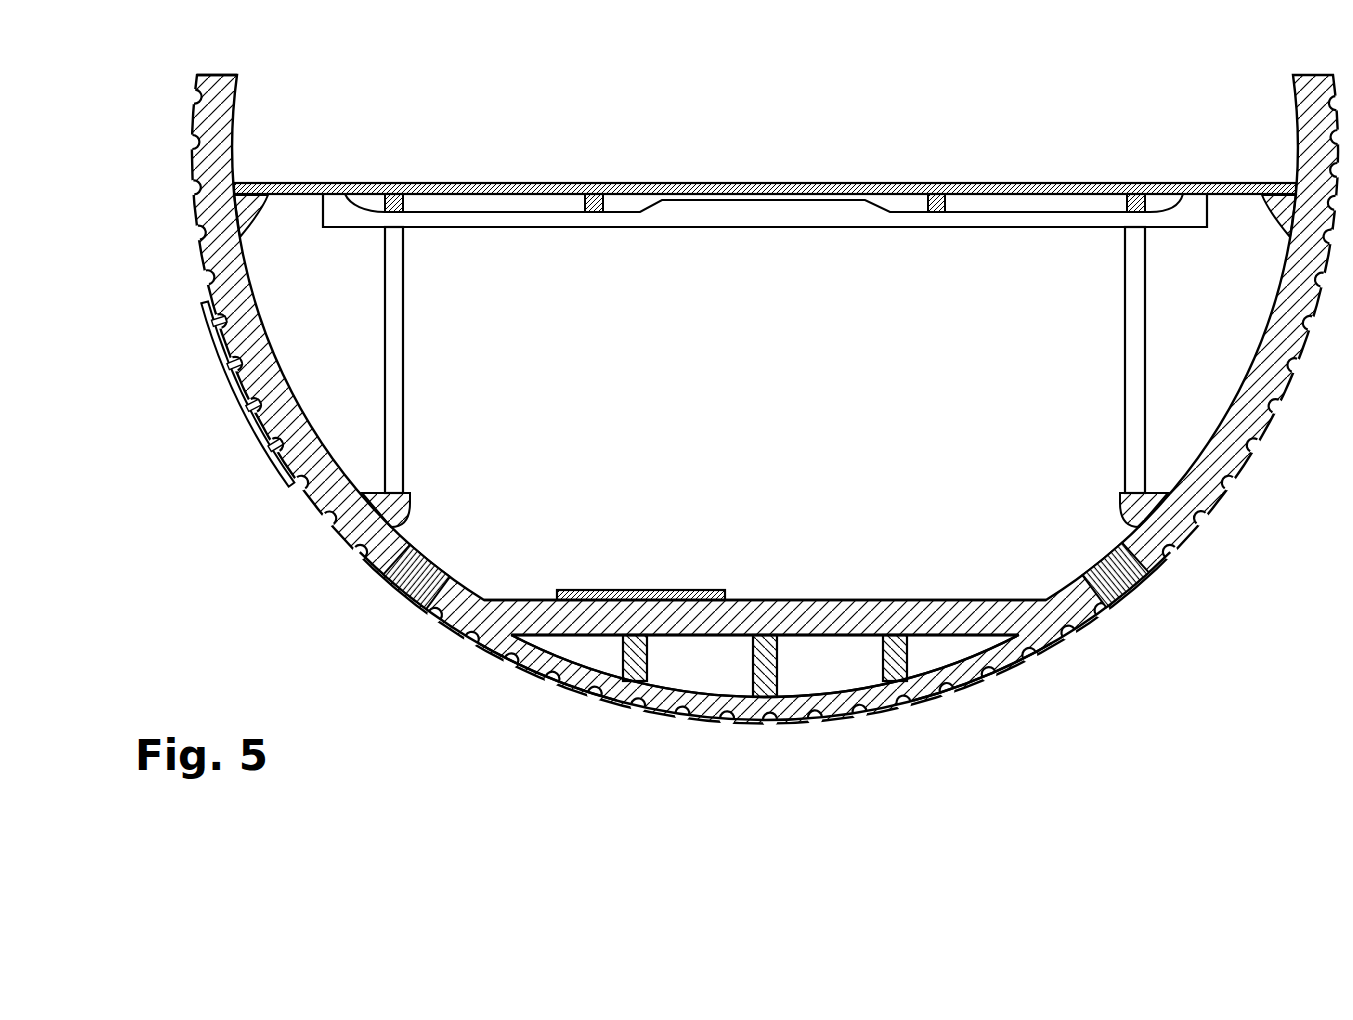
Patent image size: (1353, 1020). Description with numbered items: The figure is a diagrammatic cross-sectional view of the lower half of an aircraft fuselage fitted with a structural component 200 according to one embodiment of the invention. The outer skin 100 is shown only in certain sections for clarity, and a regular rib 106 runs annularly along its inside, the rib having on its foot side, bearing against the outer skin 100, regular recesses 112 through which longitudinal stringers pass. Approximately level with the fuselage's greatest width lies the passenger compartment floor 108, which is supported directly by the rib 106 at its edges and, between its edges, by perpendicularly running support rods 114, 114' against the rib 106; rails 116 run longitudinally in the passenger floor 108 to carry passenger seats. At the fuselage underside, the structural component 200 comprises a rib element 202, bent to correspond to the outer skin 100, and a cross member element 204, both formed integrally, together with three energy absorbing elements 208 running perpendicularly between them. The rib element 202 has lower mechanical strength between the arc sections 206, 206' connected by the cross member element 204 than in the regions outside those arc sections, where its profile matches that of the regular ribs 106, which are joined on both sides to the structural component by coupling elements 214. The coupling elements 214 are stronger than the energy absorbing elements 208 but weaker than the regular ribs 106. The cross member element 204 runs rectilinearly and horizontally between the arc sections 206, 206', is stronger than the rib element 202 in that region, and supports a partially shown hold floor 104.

The outer skin 100 is at (252, 423).
The hold floor 104 is at (630, 590).
The rib 106 is at (336, 545).
The passenger compartment floor 108 is at (336, 183).
The recesses 112 is at (197, 143).
The support rod 114 is at (424, 377).
The support rod 114' is at (1100, 377).
The rails 116 is at (1128, 183).
The structural component 200 is at (963, 736).
The rib element 202 is at (780, 713).
The cross member element 204 is at (866, 600).
The arc section 206 is at (509, 688).
The arc section 206' is at (1024, 690).
The energy absorbing elements 208 is at (758, 675).
The coupling elements 214 is at (418, 583).